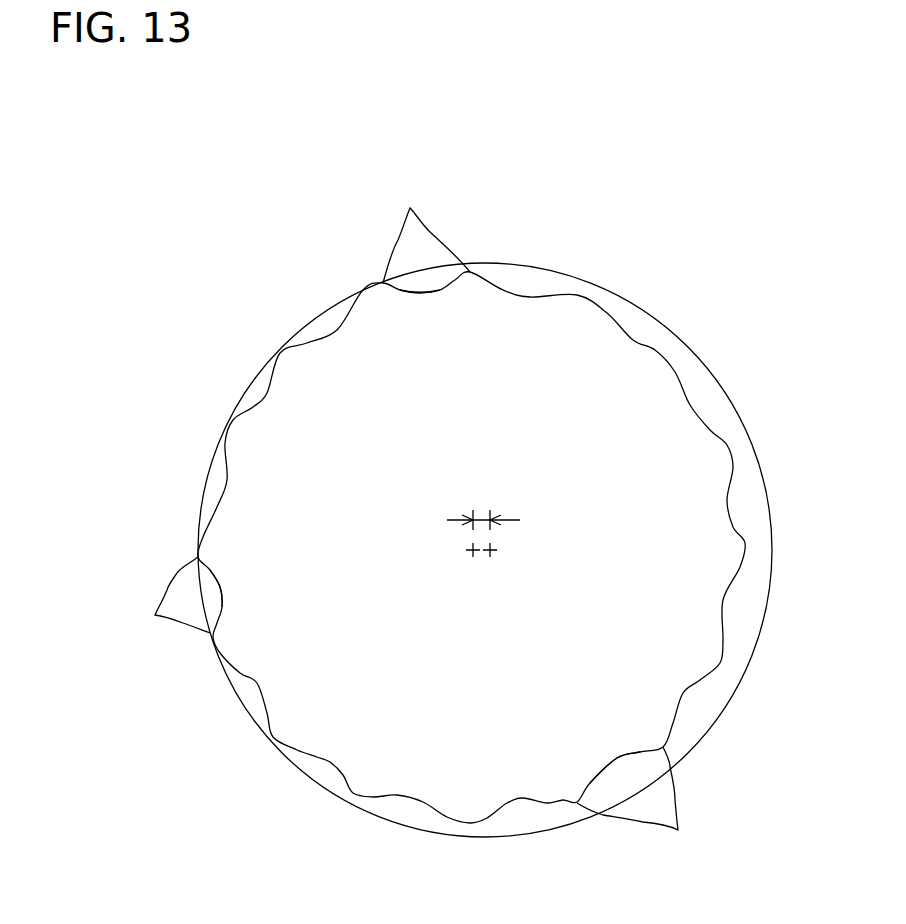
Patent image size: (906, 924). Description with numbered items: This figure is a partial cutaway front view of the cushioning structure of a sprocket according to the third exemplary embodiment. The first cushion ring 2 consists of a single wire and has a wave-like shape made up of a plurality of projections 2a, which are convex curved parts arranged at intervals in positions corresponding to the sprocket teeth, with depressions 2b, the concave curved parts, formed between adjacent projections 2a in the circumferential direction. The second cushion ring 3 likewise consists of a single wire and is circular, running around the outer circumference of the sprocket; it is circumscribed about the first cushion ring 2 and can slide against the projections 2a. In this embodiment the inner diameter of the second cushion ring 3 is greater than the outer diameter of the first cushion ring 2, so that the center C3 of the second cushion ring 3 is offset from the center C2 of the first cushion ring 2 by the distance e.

The first cushion ring 2 is at (742, 489).
The projections 2a is at (415, 520).
The depressions 2b is at (433, 293).
The second cushion ring 3 is at (722, 370).
The offset e is at (483, 505).
The center of the first cushion ring C2 is at (469, 556).
The center of the second cushion ring C3 is at (493, 556).